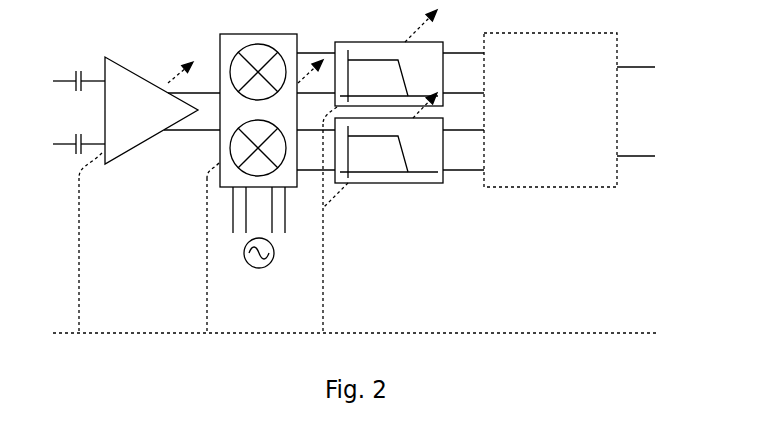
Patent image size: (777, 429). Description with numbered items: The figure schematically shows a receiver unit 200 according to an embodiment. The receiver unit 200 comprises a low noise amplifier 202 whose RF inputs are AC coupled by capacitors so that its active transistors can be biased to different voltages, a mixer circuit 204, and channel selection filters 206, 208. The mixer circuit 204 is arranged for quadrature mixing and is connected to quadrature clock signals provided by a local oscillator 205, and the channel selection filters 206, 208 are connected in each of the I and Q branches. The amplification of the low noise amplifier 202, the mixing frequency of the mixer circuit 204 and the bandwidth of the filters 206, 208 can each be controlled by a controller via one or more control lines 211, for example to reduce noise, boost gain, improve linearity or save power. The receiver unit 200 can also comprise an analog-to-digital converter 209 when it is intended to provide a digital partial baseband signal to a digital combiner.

The receiver unit 200 is at (402, 257).
The low noise amplifier 202 is at (118, 72).
The mixer circuit 204 is at (250, 41).
The local oscillator 205 is at (245, 258).
The channel selection filter 206 is at (400, 47).
The channel selection filter 208 is at (412, 173).
The analog-to-digital converter 209 is at (553, 42).
The control line 211 is at (557, 335).